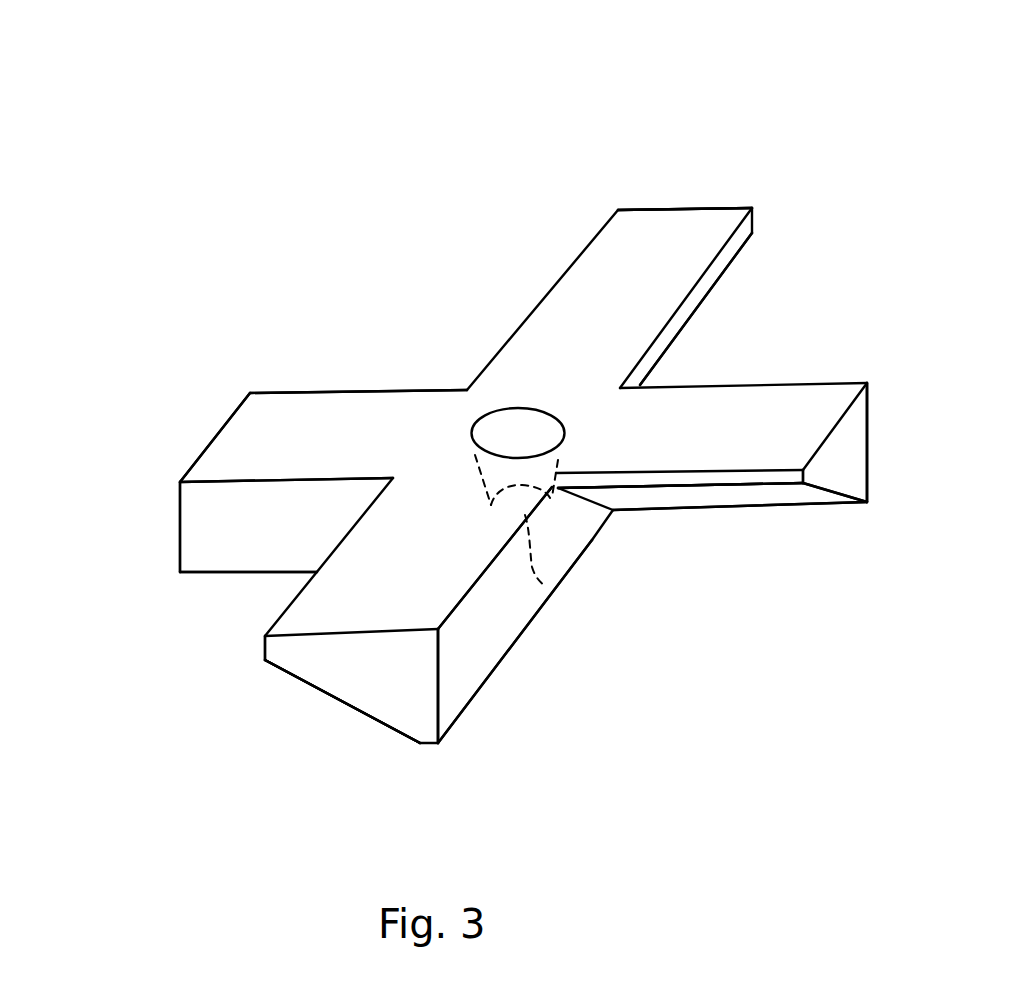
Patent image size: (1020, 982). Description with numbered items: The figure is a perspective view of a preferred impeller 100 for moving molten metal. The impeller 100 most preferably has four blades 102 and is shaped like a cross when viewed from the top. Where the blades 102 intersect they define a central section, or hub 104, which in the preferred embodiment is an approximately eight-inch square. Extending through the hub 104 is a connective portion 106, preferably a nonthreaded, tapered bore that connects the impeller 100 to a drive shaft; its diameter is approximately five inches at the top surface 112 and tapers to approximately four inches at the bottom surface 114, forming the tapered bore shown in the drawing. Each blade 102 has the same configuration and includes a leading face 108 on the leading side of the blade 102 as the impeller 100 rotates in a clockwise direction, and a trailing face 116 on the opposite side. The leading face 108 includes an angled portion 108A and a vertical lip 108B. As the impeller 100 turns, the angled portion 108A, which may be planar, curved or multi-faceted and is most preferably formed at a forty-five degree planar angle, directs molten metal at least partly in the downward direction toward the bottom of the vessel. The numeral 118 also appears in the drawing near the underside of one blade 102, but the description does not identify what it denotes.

The impeller 100 is at (803, 97).
The blade 102 is at (643, 234).
The hub 104 is at (488, 393).
The connective portion 106 is at (528, 438).
The leading face 108 is at (722, 495).
The angled portion 108A is at (792, 493).
The vertical lip 108B is at (692, 305).
The top surface 112 is at (717, 233).
The bottom surface 114 is at (181, 573).
The trailing face 116 is at (462, 680).
The bottom surface 118 is at (322, 603).